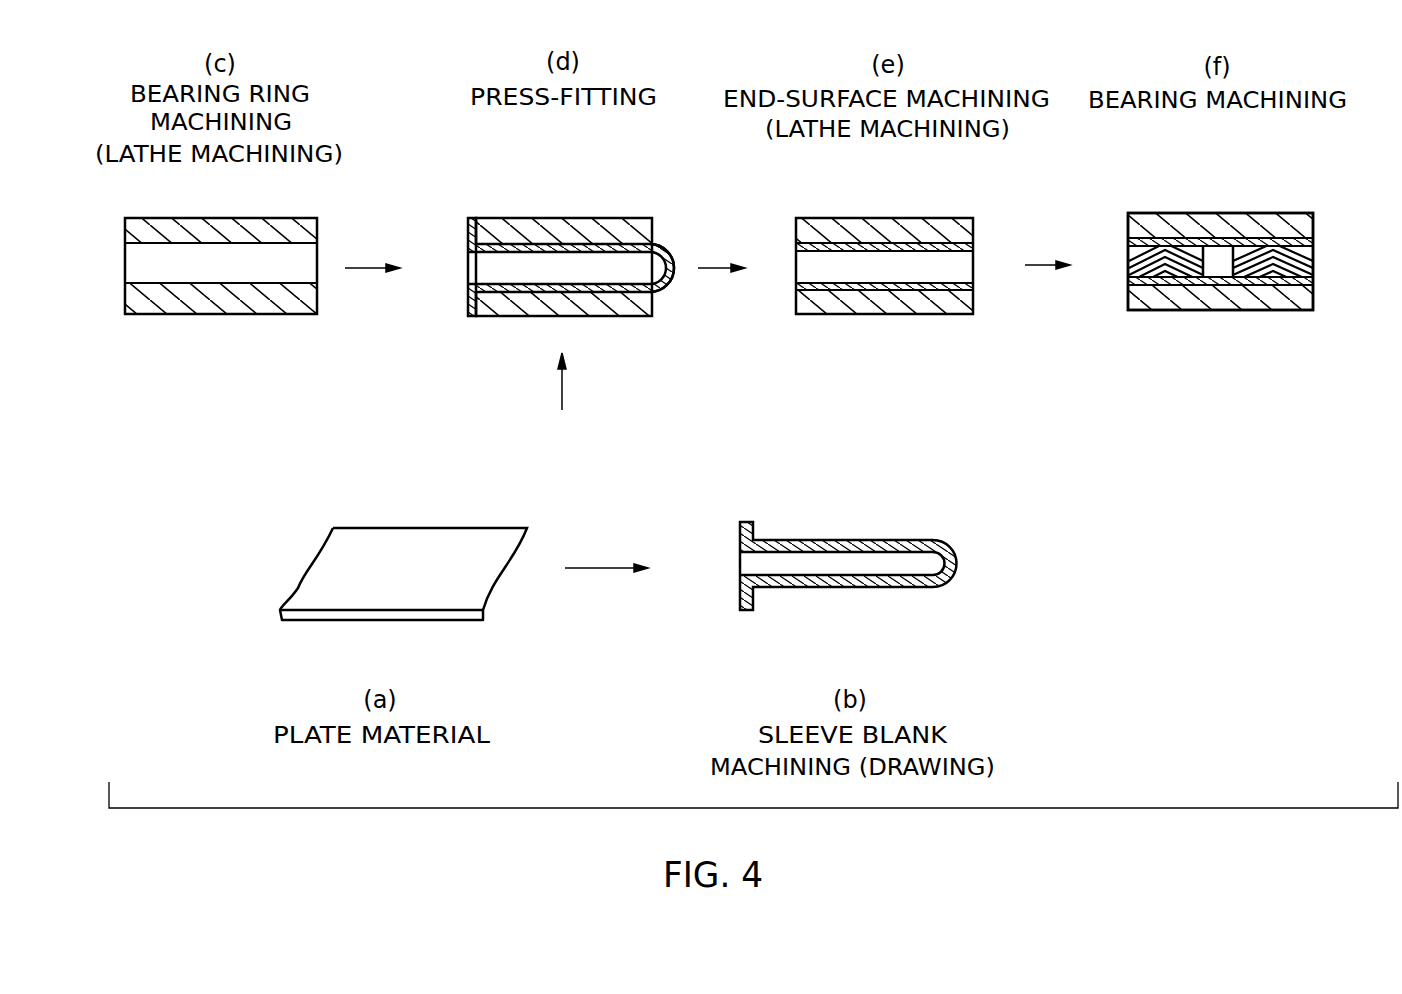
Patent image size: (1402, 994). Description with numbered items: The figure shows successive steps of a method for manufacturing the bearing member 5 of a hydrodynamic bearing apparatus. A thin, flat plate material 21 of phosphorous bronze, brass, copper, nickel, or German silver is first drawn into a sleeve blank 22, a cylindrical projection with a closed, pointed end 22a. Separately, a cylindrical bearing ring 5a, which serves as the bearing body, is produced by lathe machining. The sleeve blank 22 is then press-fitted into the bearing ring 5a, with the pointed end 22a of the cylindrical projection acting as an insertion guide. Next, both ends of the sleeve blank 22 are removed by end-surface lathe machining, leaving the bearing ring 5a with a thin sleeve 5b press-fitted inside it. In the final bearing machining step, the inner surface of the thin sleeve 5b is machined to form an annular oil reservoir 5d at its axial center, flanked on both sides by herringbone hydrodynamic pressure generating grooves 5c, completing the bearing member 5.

The bearing member 5 is at (1287, 198).
The bearing ring 5a is at (297, 237).
The thin sleeve 5b is at (973, 286).
The herringbone hydrodynamic pressure generating grooves 5c is at (1313, 288).
The oil reservoir 5d is at (1220, 263).
The plate material 21 is at (475, 590).
The sleeve blank 22 is at (905, 580).
The pointed end 22a is at (672, 272).